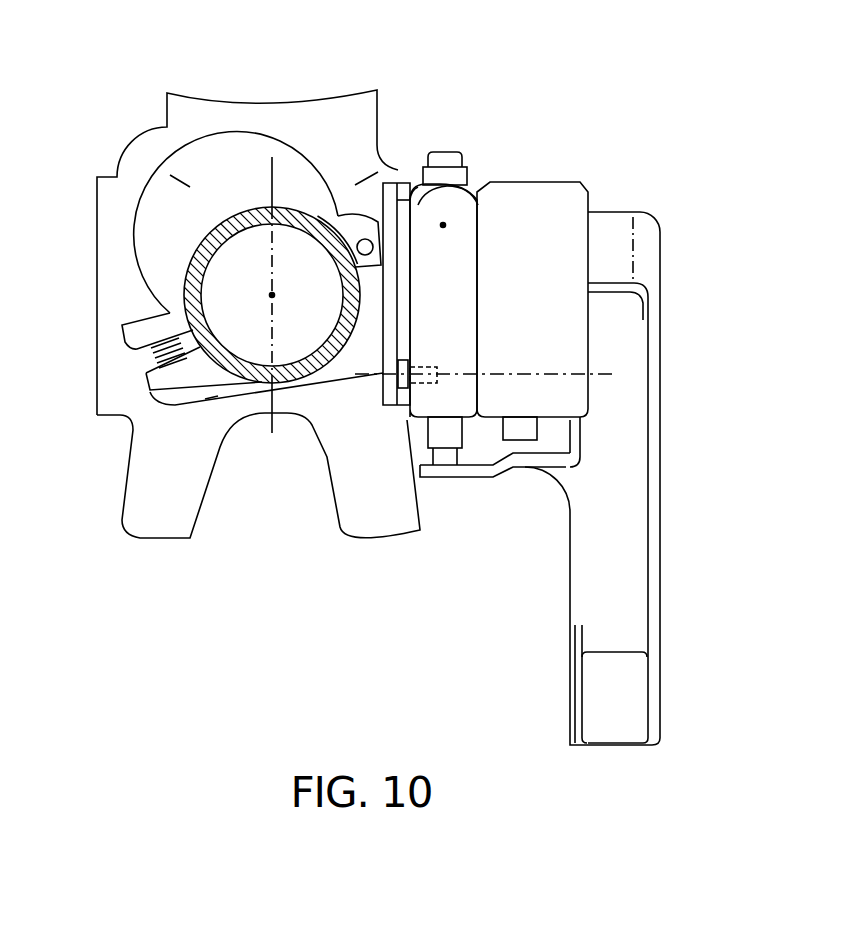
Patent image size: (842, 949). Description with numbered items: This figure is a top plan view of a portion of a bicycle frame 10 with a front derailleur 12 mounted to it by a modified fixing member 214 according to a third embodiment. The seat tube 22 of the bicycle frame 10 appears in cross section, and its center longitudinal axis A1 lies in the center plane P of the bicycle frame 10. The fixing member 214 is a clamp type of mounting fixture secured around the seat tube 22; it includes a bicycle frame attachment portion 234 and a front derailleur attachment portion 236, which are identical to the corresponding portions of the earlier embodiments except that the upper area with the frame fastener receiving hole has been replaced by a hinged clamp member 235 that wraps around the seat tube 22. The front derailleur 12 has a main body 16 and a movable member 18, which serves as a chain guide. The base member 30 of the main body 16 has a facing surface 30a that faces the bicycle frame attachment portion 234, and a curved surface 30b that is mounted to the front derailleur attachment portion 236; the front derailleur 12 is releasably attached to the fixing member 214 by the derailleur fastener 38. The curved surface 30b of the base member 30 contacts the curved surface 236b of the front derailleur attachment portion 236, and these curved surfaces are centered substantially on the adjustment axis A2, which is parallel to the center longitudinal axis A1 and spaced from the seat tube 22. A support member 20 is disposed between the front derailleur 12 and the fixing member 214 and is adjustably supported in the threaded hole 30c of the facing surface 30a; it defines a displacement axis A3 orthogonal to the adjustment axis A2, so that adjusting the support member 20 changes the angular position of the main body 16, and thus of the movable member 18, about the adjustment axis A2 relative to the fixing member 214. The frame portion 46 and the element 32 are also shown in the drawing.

The bicycle frame 10 is at (123, 472).
The front derailleur 12 is at (625, 189).
The main body 16 is at (535, 528).
The movable member 18 is at (667, 450).
The support member 20 is at (404, 410).
The seat tube 22 is at (193, 232).
The base member 30 is at (447, 430).
The facing surface 30a is at (376, 283).
The curved surface 30b is at (413, 165).
The threaded hole 30c is at (437, 365).
The second mounting member 32 is at (520, 433).
The derailleur fastener 38 is at (448, 151).
The frame portion 46 is at (122, 175).
The fixing member 214 is at (376, 60).
The bicycle frame attachment portion 234 is at (373, 202).
The hinged clamp member 235 is at (217, 400).
The front derailleur attachment portion 236 is at (401, 165).
The curved surface 236b is at (449, 190).
The center longitudinal axis A1 is at (269, 295).
The adjustment axis A2 is at (443, 228).
The displacement axis A3 is at (510, 372).
The center plane P is at (270, 173).